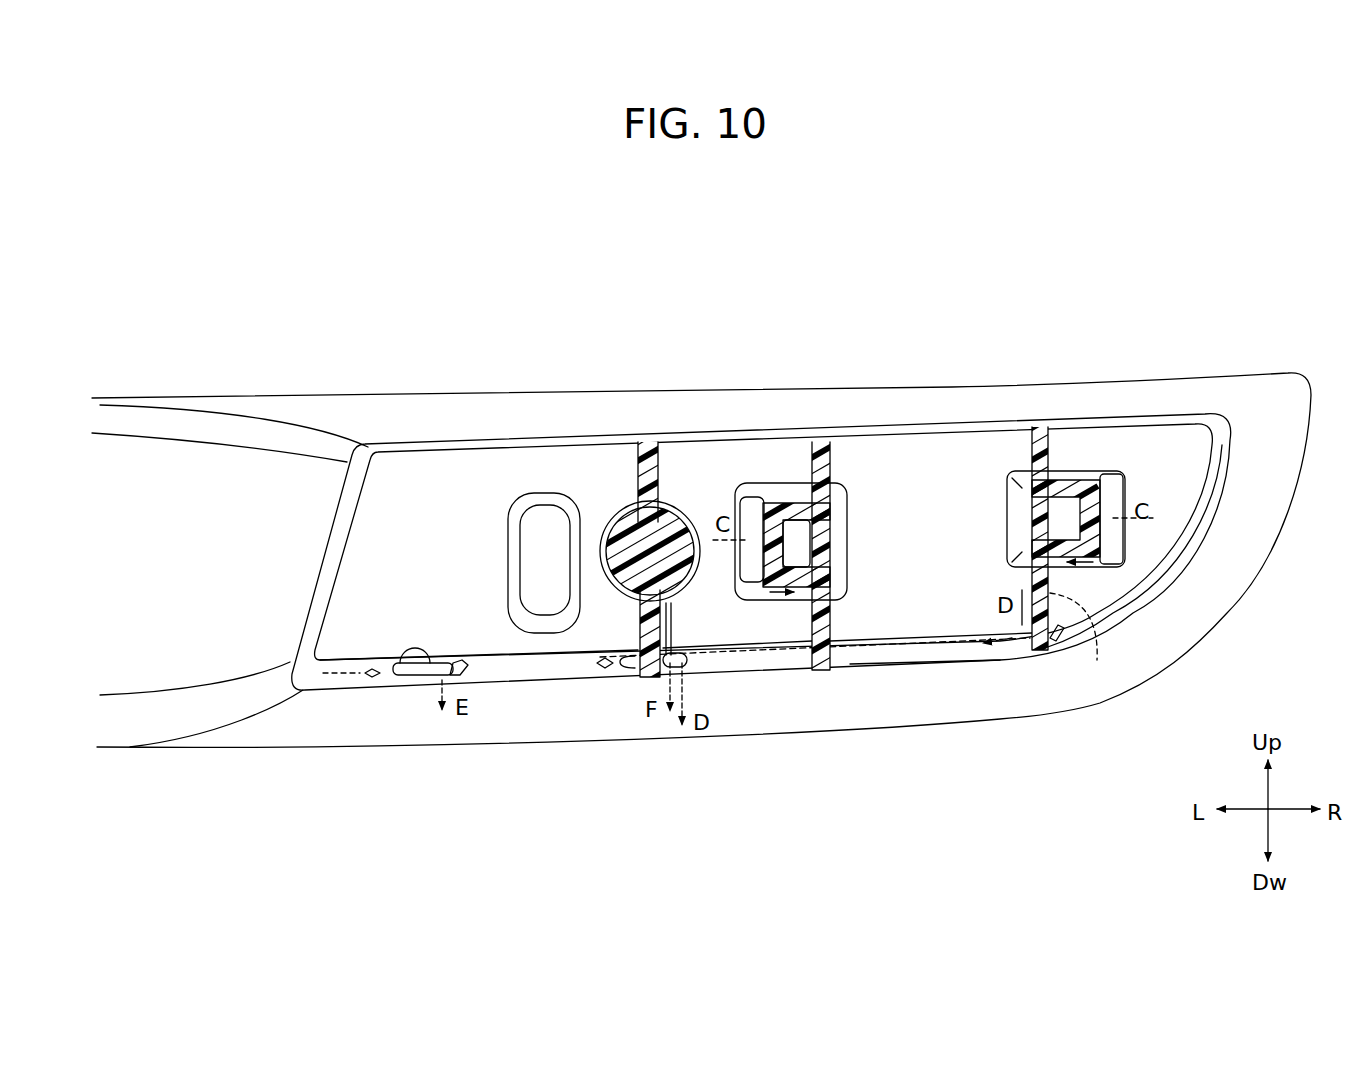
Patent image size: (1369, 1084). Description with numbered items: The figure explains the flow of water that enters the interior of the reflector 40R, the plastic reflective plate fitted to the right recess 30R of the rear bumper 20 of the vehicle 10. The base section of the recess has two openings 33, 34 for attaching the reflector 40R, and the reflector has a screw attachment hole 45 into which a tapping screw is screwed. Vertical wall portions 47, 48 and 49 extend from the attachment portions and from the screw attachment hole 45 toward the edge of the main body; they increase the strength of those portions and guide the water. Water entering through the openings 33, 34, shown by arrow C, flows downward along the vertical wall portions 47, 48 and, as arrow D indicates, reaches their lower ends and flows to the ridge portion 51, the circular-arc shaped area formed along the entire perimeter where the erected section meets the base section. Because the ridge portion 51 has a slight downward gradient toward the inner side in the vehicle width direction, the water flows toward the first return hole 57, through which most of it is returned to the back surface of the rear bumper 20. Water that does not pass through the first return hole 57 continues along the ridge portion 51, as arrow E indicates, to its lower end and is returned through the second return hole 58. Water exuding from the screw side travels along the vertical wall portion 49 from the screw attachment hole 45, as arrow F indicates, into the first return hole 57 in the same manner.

The vehicle 10 is at (220, 264).
The rear bumper 20 is at (930, 354).
The recess 30R is at (525, 390).
The reflector 40R is at (668, 447).
The screw attachment hole 45 is at (613, 517).
The opening 34 is at (753, 492).
The opening 33 is at (1108, 470).
The second return hole 58 is at (403, 668).
The vertical wall portion 49 is at (637, 627).
The first return hole 57 is at (677, 648).
The vertical wall portion 48 is at (843, 623).
The ridge portion 51 is at (960, 637).
The vertical wall portion 47 is at (1068, 625).